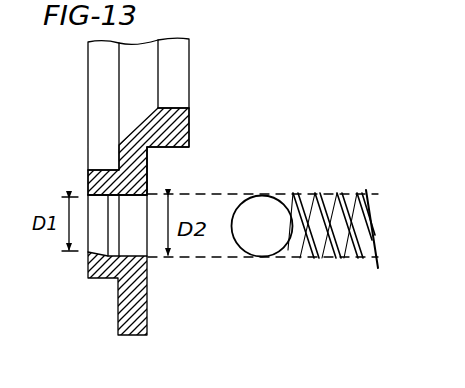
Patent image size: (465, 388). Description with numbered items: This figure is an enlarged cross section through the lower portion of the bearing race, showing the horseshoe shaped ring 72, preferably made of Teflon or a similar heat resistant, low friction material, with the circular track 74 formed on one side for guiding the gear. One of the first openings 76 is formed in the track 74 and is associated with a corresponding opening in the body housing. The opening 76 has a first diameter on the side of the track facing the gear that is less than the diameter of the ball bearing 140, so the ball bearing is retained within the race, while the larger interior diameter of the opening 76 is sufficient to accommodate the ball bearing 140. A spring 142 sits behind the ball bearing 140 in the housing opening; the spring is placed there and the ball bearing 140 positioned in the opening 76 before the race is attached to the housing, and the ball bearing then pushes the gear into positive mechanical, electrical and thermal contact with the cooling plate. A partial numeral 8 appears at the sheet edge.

The horseshoe shaped ring 72 is at (140, 327).
The circular track 74 is at (89, 268).
The first openings 76 is at (132, 242).
The ball bearing 140 is at (258, 213).
The spring 142 is at (335, 197).
The partial numeral (clipped) 8 is at (459, 146).